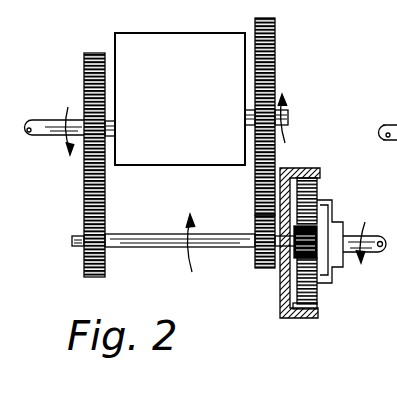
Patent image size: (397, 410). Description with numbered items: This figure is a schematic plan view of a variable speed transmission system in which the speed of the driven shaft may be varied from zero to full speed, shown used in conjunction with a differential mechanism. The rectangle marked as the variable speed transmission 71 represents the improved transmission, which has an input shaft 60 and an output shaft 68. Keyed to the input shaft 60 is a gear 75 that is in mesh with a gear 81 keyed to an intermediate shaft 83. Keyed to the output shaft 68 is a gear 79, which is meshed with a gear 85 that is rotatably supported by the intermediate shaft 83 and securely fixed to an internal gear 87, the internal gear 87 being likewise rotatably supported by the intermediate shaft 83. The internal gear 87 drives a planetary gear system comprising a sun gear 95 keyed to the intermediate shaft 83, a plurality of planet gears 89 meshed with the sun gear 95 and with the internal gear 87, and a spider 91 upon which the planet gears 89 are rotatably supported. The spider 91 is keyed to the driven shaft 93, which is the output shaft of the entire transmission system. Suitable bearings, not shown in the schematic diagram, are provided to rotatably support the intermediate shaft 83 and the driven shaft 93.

The input shaft 60 is at (59, 134).
The output shaft 68 is at (249, 124).
The variable speed transmission 71 is at (155, 157).
The gear 75 is at (86, 85).
The gear 79 is at (274, 80).
The gear 81 is at (84, 265).
The intermediate shaft 83 is at (158, 247).
The gear 85 is at (256, 262).
The internal gear 87 is at (304, 319).
The planet gears 89 is at (313, 190).
The spider 91 is at (328, 222).
The driven shaft 93 is at (372, 240).
The sun gear 95 is at (318, 251).